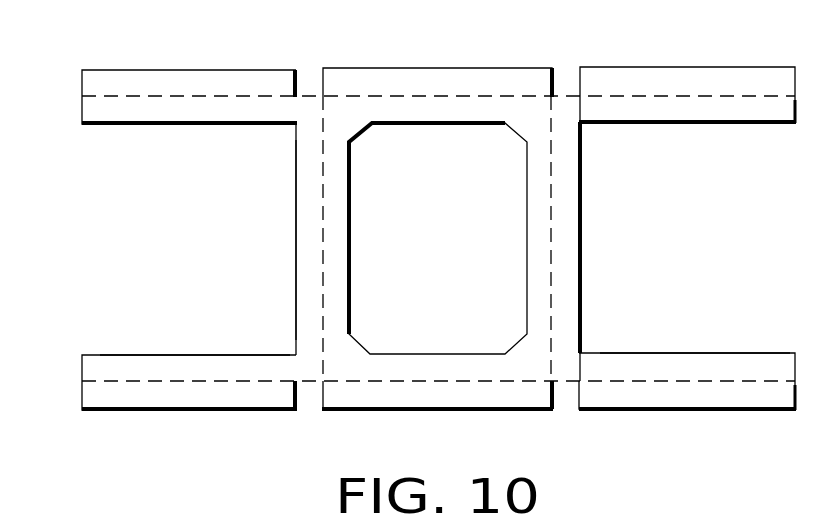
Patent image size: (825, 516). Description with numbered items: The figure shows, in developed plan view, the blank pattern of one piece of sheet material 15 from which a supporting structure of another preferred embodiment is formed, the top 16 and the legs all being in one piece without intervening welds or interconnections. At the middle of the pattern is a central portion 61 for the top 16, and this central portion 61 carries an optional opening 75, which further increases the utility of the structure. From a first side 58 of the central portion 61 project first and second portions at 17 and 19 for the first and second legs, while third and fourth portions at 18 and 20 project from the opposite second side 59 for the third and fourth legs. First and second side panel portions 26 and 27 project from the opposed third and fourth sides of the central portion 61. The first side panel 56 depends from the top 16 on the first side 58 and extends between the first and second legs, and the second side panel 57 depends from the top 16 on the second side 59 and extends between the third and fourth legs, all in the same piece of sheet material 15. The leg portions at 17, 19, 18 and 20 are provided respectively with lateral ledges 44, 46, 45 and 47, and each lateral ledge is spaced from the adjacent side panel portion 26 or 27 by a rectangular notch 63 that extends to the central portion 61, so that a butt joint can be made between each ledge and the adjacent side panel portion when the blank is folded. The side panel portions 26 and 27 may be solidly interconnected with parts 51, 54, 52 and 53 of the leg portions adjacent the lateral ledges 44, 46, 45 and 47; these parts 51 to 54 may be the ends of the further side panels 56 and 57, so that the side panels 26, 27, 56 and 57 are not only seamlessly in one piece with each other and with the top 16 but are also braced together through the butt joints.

The sheet material 15 is at (296, 215).
The top 16 is at (439, 359).
The first leg portion 17 is at (137, 377).
The third leg portion 18 is at (698, 371).
The second leg portion 19 is at (173, 101).
The fourth leg portion 20 is at (753, 103).
The first side panel portion 26 is at (420, 398).
The second side panel portion 27 is at (441, 82).
The lateral ledge 44 is at (155, 400).
The lateral ledge 45 is at (712, 395).
The lateral ledge 46 is at (101, 78).
The lateral ledge 47 is at (683, 79).
The leg section 51 is at (300, 365).
The leg section 52 is at (578, 362).
The leg section 53 is at (577, 107).
The leg section 54 is at (302, 110).
The first side panel 56 is at (310, 264).
The second side panel 57 is at (557, 238).
The first side 58 is at (191, 257).
The second side 59 is at (710, 257).
The central portion 61 is at (487, 103).
The notch 63 is at (313, 95).
The opening 75 is at (450, 255).